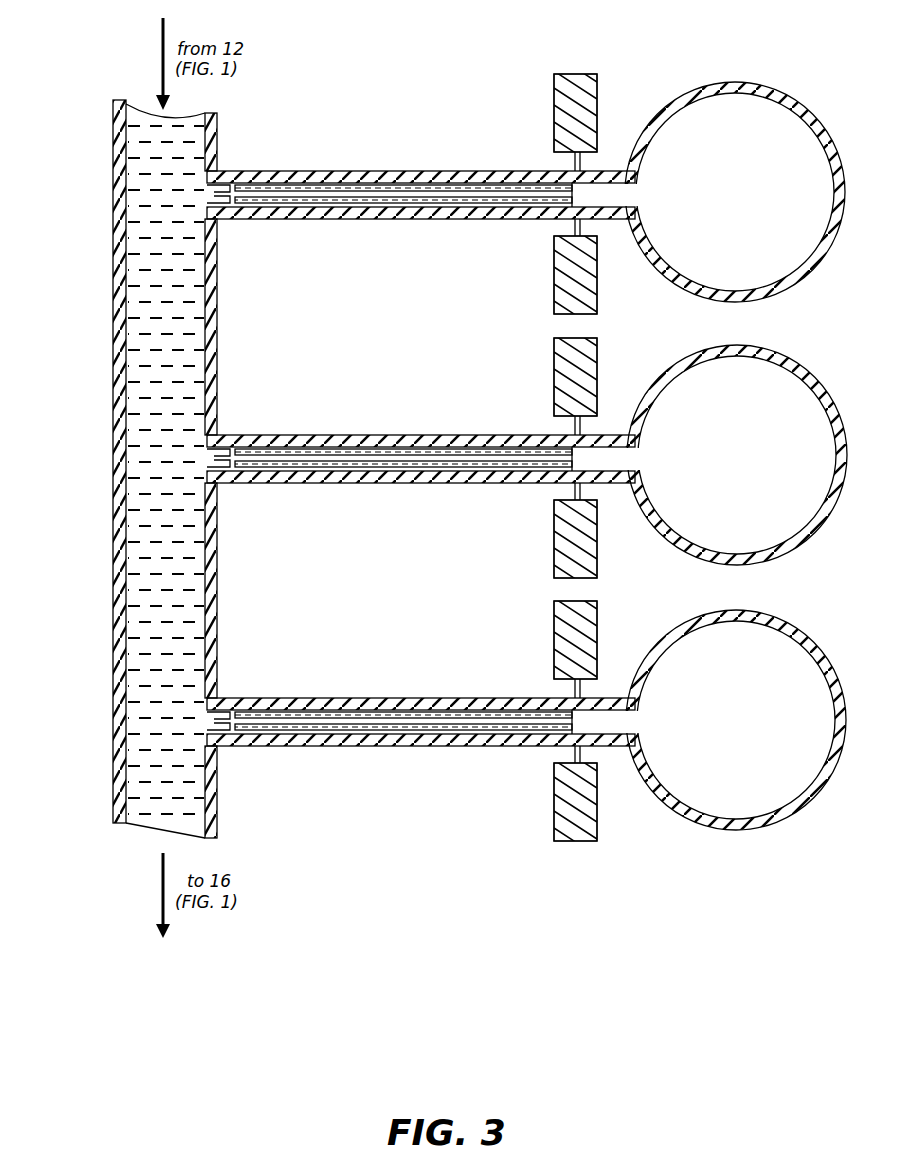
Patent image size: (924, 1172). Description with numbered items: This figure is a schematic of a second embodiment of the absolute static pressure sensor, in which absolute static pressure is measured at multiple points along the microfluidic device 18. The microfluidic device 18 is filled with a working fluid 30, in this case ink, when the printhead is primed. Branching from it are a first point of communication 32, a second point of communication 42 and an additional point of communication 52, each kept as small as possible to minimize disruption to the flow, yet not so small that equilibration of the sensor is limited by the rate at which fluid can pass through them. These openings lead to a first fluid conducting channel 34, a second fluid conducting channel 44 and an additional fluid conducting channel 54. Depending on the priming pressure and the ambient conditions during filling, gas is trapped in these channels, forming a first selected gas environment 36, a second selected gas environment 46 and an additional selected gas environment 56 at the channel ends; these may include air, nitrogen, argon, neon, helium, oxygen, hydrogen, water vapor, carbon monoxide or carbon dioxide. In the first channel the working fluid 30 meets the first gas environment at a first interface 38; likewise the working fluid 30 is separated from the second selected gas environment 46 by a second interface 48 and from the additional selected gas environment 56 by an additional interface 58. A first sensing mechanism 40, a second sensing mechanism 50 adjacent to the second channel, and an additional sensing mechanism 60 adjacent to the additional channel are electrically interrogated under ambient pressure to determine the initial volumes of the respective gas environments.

The microfluidic device 18 is at (113, 377).
The working fluid 30 is at (150, 166).
The first point of communication 32 is at (212, 197).
The first fluid conducting channel 34 is at (330, 171).
The first selected gas environment 36 is at (737, 120).
The electrode plates 38 is at (485, 183).
The first sensing mechanism 40 is at (521, 189).
The second point of communication 42 is at (236, 419).
The second fluid conducting channel 44 is at (421, 427).
The second selected gas environment 46 is at (734, 438).
The second interface 48 is at (403, 420).
The second sensing mechanism 50 is at (543, 420).
The additional point of communication 52 is at (236, 682).
The additional fluid conducting channel 54 is at (421, 690).
The additional selected gas environment 56 is at (734, 699).
The additional interface 58 is at (403, 685).
The additional sensing mechanism 60 is at (543, 685).